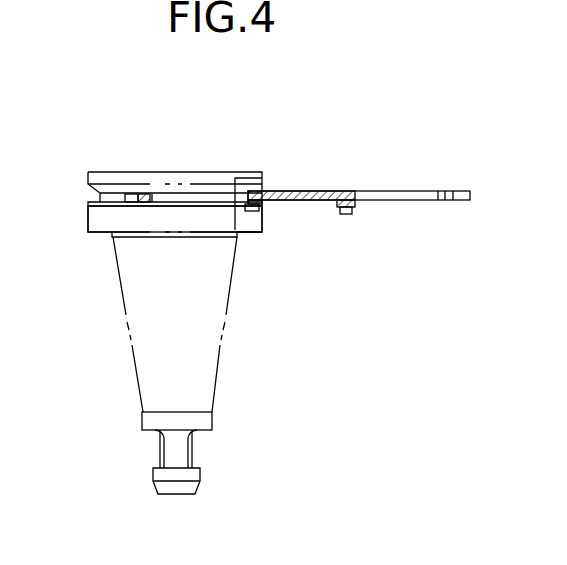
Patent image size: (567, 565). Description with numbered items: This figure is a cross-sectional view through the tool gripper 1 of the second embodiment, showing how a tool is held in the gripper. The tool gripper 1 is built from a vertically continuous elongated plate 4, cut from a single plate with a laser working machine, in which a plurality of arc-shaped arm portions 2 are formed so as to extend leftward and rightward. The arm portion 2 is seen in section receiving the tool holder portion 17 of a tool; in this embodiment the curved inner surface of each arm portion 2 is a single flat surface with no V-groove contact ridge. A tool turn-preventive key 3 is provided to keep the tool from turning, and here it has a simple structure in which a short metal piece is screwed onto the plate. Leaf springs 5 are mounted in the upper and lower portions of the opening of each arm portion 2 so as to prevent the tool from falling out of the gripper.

The tool gripper 1 is at (359, 159).
The arm portion 2 is at (190, 184).
The tool turn-preventive key 3 is at (245, 204).
The elongated plate 4 is at (385, 183).
The leaf spring 5 is at (143, 195).
The tool holder portion 17 is at (90, 219).